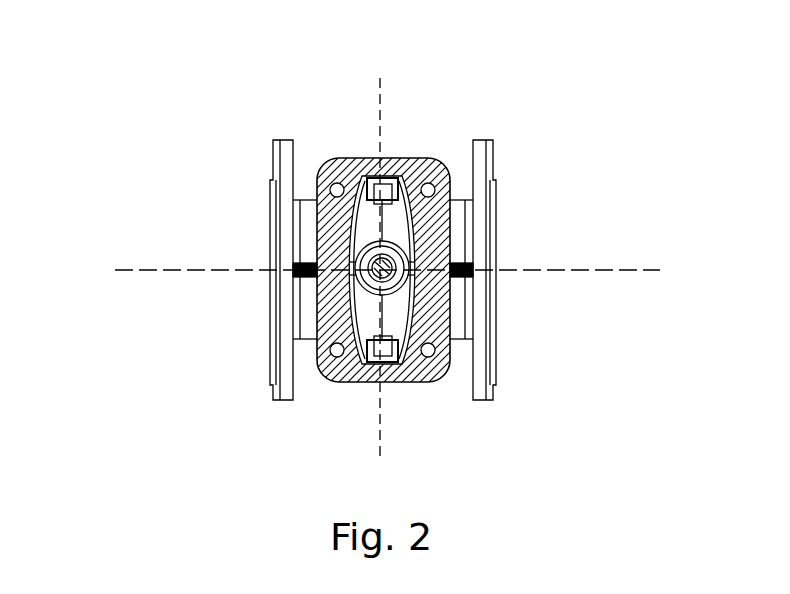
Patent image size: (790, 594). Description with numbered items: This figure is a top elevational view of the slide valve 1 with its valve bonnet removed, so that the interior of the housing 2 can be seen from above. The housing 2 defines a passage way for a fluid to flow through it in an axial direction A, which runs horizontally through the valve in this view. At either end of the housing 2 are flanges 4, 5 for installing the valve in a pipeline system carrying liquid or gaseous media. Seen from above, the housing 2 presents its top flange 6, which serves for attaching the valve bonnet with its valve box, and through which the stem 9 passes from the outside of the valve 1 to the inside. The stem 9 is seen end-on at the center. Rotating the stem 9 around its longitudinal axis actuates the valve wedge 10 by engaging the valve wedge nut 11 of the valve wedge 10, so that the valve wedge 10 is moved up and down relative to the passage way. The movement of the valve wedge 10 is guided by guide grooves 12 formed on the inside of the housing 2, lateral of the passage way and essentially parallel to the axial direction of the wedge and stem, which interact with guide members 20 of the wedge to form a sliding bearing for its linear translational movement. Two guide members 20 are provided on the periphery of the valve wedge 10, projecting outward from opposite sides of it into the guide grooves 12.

The slide valve 1 is at (230, 112).
The housing 2 is at (305, 240).
The flange 4 is at (276, 215).
The flange 5 is at (494, 187).
The top flange 6 is at (345, 159).
The stem 9 is at (405, 262).
The valve wedge 10 is at (400, 313).
The valve wedge nut 11 is at (350, 270).
The guide grooves 12 is at (408, 160).
The guide members 20 is at (366, 158).
The axial direction A is at (578, 272).